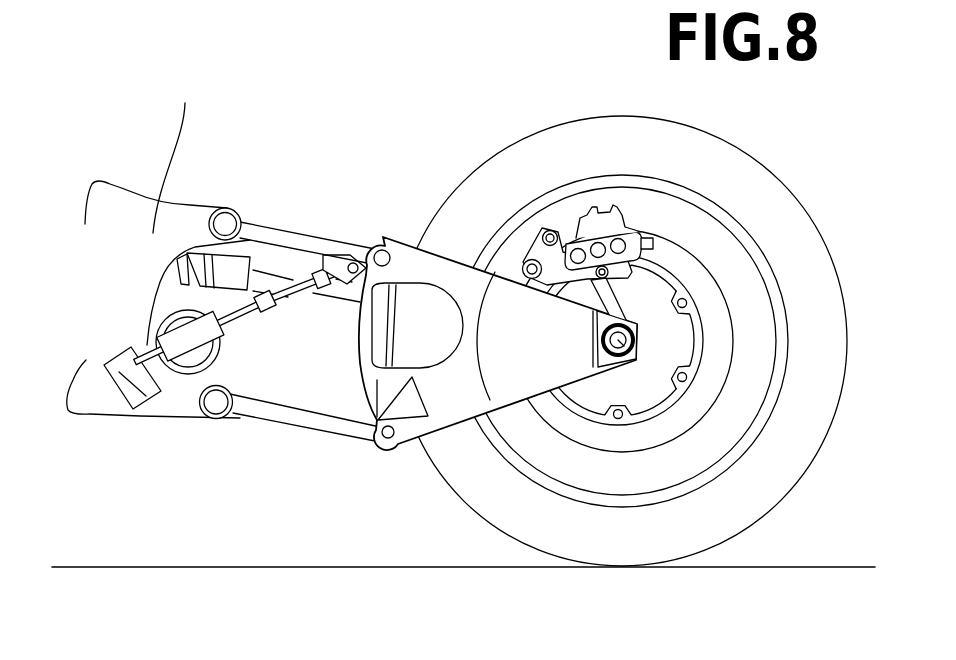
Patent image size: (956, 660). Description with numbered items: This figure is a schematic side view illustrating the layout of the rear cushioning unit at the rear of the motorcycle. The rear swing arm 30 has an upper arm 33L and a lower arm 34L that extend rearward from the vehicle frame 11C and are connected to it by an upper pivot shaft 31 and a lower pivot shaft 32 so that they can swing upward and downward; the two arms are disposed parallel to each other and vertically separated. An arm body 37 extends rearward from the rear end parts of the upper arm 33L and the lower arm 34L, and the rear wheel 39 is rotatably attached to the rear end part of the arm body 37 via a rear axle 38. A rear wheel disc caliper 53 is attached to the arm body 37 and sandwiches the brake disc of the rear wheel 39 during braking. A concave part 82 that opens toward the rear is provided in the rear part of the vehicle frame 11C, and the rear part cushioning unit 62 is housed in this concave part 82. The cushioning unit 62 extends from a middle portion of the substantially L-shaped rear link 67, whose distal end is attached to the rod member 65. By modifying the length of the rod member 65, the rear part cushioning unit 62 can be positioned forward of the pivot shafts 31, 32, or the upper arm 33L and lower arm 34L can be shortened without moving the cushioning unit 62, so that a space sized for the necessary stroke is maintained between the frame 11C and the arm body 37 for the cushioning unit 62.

The vehicle frame 11C is at (213, 240).
The rear swing arm 30 is at (303, 285).
The upper pivot shaft 31 is at (227, 220).
The lower pivot shaft 32 is at (223, 420).
The upper arm 33L is at (279, 234).
The lower arm 34L is at (288, 423).
The arm body 37 is at (409, 240).
The rear axle 38 is at (620, 346).
The rear wheel 39 is at (792, 458).
The rear wheel disc caliper 53 is at (542, 226).
The rear part cushioning unit 62 is at (194, 381).
The rod member 65 is at (302, 302).
The rear link 67 is at (170, 382).
The concave part 82 is at (150, 318).